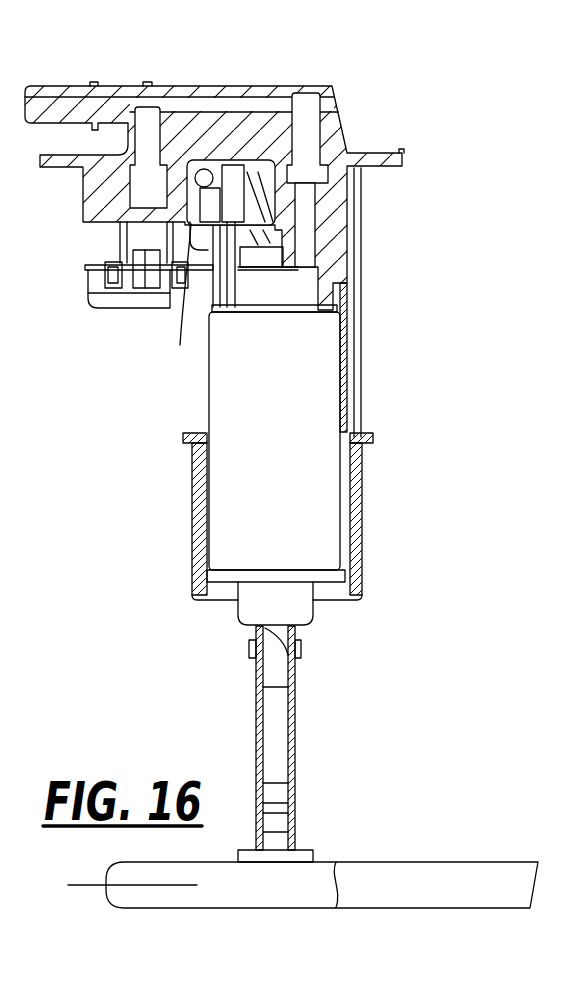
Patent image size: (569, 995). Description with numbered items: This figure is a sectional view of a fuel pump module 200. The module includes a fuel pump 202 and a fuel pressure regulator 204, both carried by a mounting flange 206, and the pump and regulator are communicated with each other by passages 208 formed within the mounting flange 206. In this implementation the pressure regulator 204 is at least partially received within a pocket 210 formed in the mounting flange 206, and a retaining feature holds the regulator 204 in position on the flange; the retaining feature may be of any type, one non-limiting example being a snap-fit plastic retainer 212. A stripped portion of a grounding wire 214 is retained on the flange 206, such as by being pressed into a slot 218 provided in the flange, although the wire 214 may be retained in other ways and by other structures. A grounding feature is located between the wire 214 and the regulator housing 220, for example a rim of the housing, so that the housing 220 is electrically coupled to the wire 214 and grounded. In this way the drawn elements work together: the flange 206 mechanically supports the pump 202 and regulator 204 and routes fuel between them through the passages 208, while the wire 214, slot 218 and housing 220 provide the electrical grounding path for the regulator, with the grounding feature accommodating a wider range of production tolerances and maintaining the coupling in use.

The fuel pump module 200 is at (400, 262).
The fuel pump 202 is at (313, 403).
The fuel pressure regulator 204 is at (148, 318).
The mounting flange 206 is at (350, 152).
The passages 208 is at (308, 132).
The pocket 210 is at (144, 235).
The snap-fit plastic retainer 212 is at (113, 283).
The grounding wire 214 is at (186, 226).
The slot 218 is at (181, 345).
The regulator housing 220 is at (145, 272).